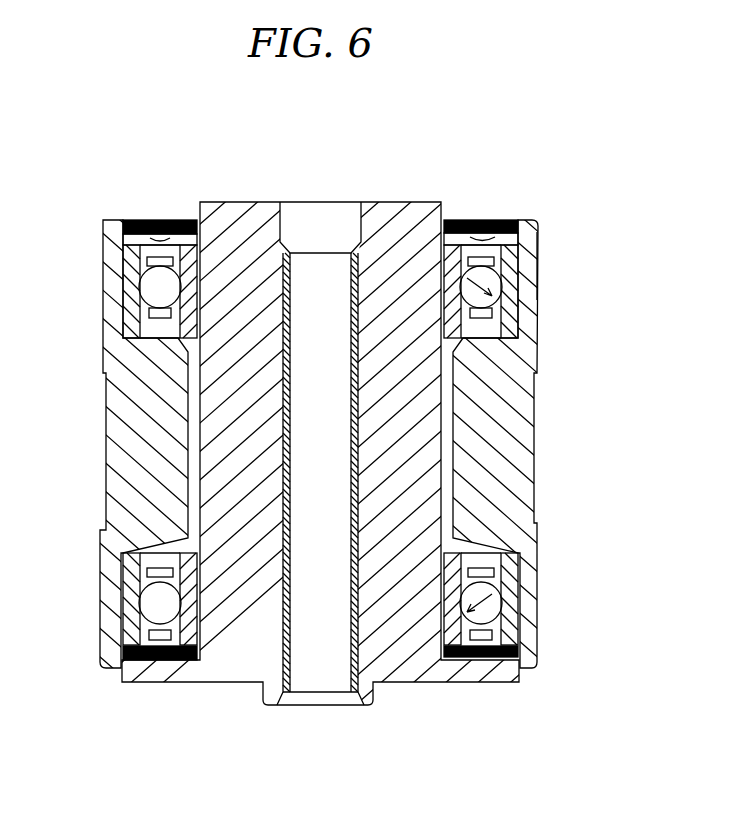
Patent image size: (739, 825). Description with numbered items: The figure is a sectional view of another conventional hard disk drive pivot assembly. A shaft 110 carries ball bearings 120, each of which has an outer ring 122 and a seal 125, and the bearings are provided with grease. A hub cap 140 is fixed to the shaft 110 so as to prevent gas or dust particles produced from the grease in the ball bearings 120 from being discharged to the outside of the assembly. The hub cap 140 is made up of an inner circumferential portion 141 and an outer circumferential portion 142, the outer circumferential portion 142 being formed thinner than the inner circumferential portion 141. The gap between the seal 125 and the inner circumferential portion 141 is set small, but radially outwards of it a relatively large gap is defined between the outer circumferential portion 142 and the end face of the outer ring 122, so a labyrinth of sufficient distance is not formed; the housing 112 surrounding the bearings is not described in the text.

The shaft 110 is at (395, 202).
The housing 112 is at (165, 683).
The ball bearings 120 is at (105, 580).
The outer ring 122 is at (125, 318).
The seal 125 is at (138, 220).
The hub cap 140 is at (497, 220).
The inner circumferential portion 141 is at (472, 220).
The outer circumferential portion 142 is at (539, 262).